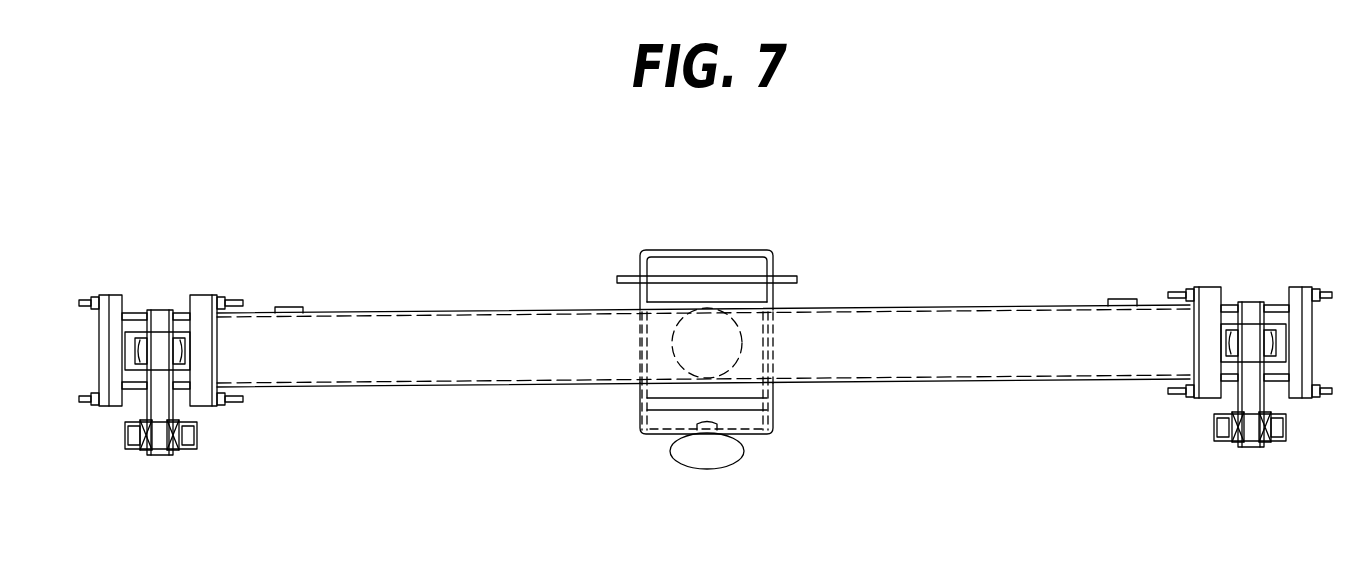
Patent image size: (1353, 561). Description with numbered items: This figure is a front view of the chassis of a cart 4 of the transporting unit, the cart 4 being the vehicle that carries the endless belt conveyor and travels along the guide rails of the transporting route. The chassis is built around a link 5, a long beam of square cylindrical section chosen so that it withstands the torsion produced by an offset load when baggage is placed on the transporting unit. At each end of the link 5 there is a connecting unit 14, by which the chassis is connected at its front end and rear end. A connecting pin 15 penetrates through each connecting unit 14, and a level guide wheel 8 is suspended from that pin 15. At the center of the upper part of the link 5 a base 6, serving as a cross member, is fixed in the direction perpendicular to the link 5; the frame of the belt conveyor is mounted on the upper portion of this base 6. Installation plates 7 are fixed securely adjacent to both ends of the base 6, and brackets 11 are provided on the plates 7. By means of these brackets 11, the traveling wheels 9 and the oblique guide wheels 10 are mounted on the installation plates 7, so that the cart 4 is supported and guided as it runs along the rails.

The cart 4 is at (703, 319).
The link 5 is at (482, 381).
The base 6 is at (668, 310).
The installation plate 7 is at (797, 278).
The level guide wheel 8 is at (195, 438).
The traveling wheel 9 is at (740, 350).
The oblique guide wheel 10 is at (687, 460).
The bracket 11 is at (660, 397).
The connecting unit 14 is at (204, 257).
The connecting pin 15 is at (158, 312).